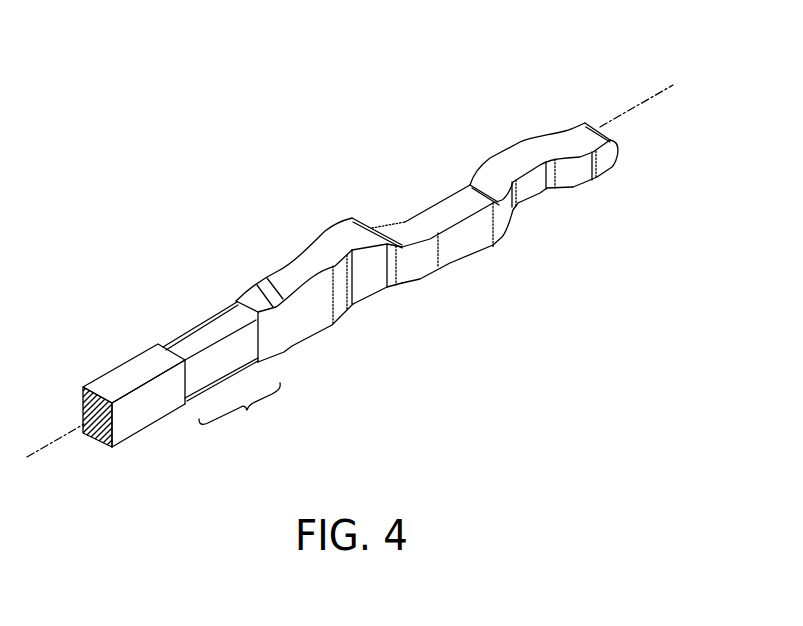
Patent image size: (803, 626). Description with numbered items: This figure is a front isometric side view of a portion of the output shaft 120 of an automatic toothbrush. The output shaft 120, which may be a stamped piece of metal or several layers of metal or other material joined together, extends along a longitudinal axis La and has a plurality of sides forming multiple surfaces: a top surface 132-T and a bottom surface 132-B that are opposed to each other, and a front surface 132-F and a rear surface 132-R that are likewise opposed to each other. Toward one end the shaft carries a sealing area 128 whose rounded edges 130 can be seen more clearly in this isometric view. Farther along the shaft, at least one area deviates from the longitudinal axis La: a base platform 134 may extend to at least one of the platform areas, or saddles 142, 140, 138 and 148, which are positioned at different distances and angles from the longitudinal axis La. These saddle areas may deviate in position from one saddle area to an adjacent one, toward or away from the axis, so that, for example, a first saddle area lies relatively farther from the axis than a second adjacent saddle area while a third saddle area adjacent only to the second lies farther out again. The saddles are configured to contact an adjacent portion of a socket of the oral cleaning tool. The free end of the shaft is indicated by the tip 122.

The output shaft 120 is at (104, 179).
The tip edge 122 is at (613, 130).
The sealing area 128 is at (240, 408).
The rounded edges 130 is at (192, 358).
The rear surface 132-R is at (82, 408).
The top surface 132-T is at (133, 377).
The front surface 132-F is at (145, 415).
The bottom surface 132-B is at (122, 447).
The base platform 134 is at (368, 227).
The saddle 138 is at (500, 153).
The saddle 140 is at (465, 247).
The saddle 142 is at (335, 228).
The saddle 148 is at (603, 162).
The longitudinal axis La is at (47, 444).